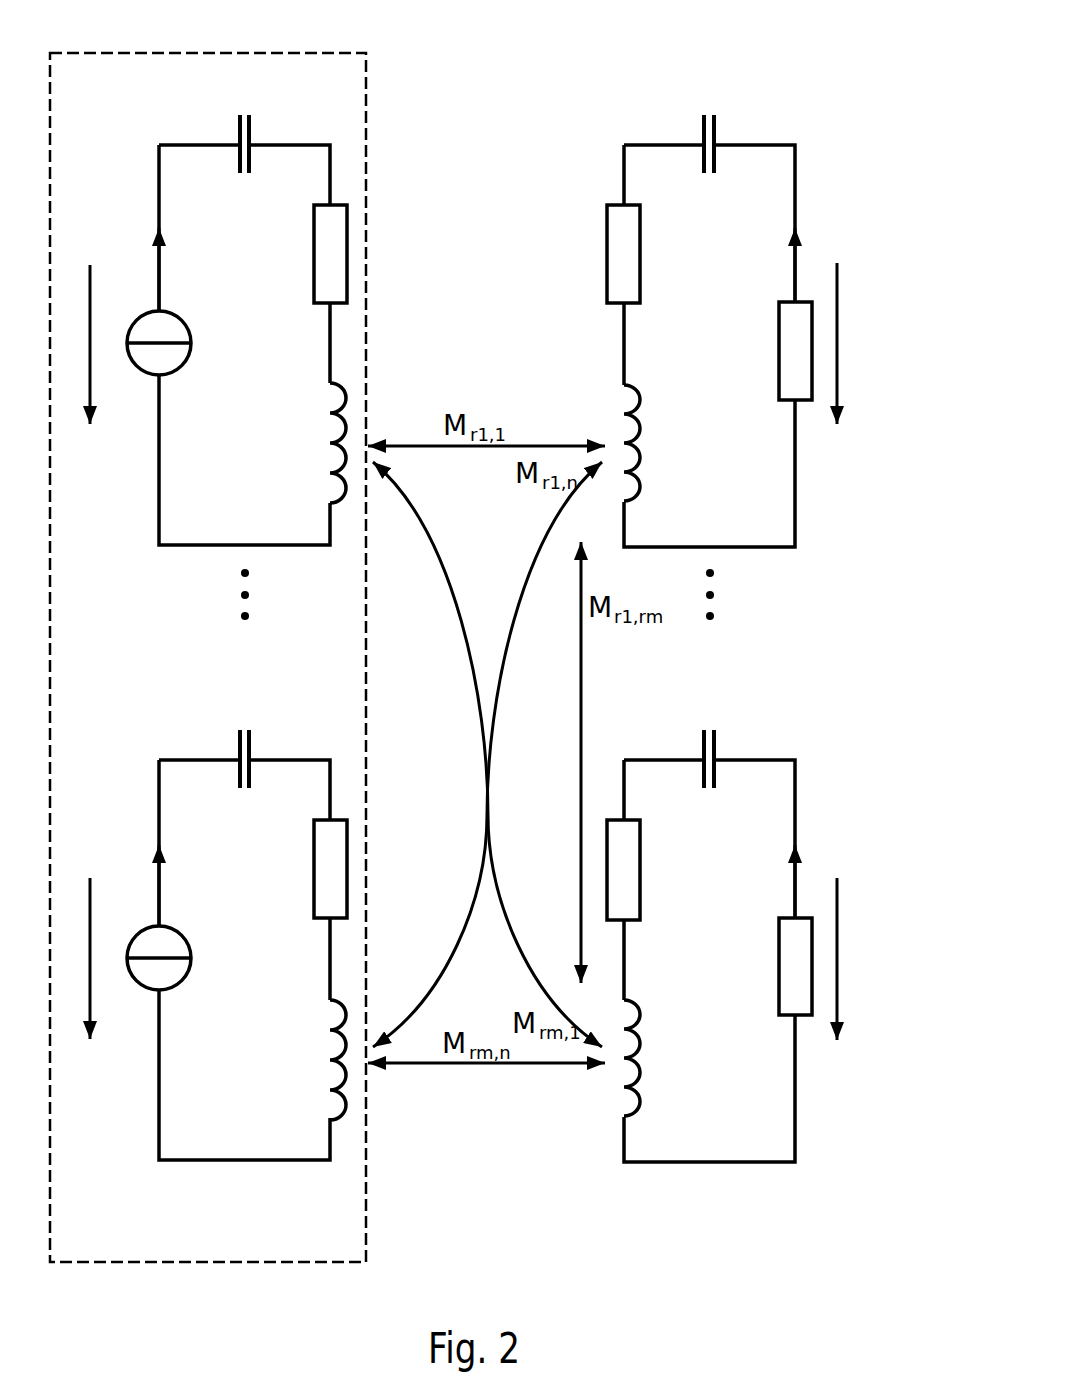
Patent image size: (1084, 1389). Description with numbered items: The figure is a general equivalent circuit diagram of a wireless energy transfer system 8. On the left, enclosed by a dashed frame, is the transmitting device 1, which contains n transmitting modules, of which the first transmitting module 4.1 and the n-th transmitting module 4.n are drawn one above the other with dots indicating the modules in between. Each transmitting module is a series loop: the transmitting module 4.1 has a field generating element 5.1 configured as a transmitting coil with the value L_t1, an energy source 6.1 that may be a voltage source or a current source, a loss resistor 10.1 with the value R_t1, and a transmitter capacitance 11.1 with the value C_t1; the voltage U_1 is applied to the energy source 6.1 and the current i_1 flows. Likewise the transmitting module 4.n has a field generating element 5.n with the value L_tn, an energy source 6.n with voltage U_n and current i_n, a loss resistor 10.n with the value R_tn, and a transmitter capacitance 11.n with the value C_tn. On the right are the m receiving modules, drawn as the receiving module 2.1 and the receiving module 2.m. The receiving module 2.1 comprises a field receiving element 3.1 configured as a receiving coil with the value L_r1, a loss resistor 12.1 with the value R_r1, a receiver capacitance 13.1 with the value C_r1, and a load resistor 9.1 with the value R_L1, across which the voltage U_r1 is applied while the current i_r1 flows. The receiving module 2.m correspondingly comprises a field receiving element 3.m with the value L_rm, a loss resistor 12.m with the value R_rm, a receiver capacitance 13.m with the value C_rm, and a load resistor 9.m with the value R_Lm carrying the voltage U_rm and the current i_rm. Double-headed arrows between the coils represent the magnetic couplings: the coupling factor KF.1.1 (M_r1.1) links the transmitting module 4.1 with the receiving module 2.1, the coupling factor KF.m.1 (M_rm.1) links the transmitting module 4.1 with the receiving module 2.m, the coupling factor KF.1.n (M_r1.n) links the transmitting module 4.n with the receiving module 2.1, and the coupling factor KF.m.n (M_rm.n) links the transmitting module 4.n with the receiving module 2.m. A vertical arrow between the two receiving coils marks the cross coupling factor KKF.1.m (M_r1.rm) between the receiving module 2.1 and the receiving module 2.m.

The transmitting device 1 is at (368, 112).
The energy transfer system 8 is at (825, 77).
The receiving module 2.1 is at (736, 312).
The receiving module 2.m is at (781, 927).
The field receiving element 3.1 is at (638, 483).
The field receiving element 3.m is at (638, 1097).
The transmitting module 4.1 is at (202, 360).
The transmitting module 4.n is at (202, 975).
The field generating element 5.1 is at (330, 473).
The field generating element 5.n is at (330, 1087).
The energy source 6.1 is at (190, 358).
The energy source 6.n is at (190, 973).
The load resistor 9.1 is at (779, 372).
The load resistor 9.m is at (779, 988).
The loss resistor 10.1 is at (314, 283).
The loss resistor 10.n is at (314, 897).
The transmitter capacitance 11.1 is at (240, 130).
The transmitter capacitance 11.n is at (240, 745).
The loss resistor 12.1 is at (607, 257).
The loss resistor 12.m is at (639, 887).
The receiver capacitance 13.1 is at (717, 132).
The receiver capacitance 13.m is at (717, 745).
The coupling factor KF.1.1 is at (512, 444).
The coupling factor KF.m.1 is at (460, 607).
The coupling factor KF.1.n is at (460, 915).
The coupling factor KF.m.n is at (518, 1065).
The cross coupling factor KKF.1.m is at (583, 651).